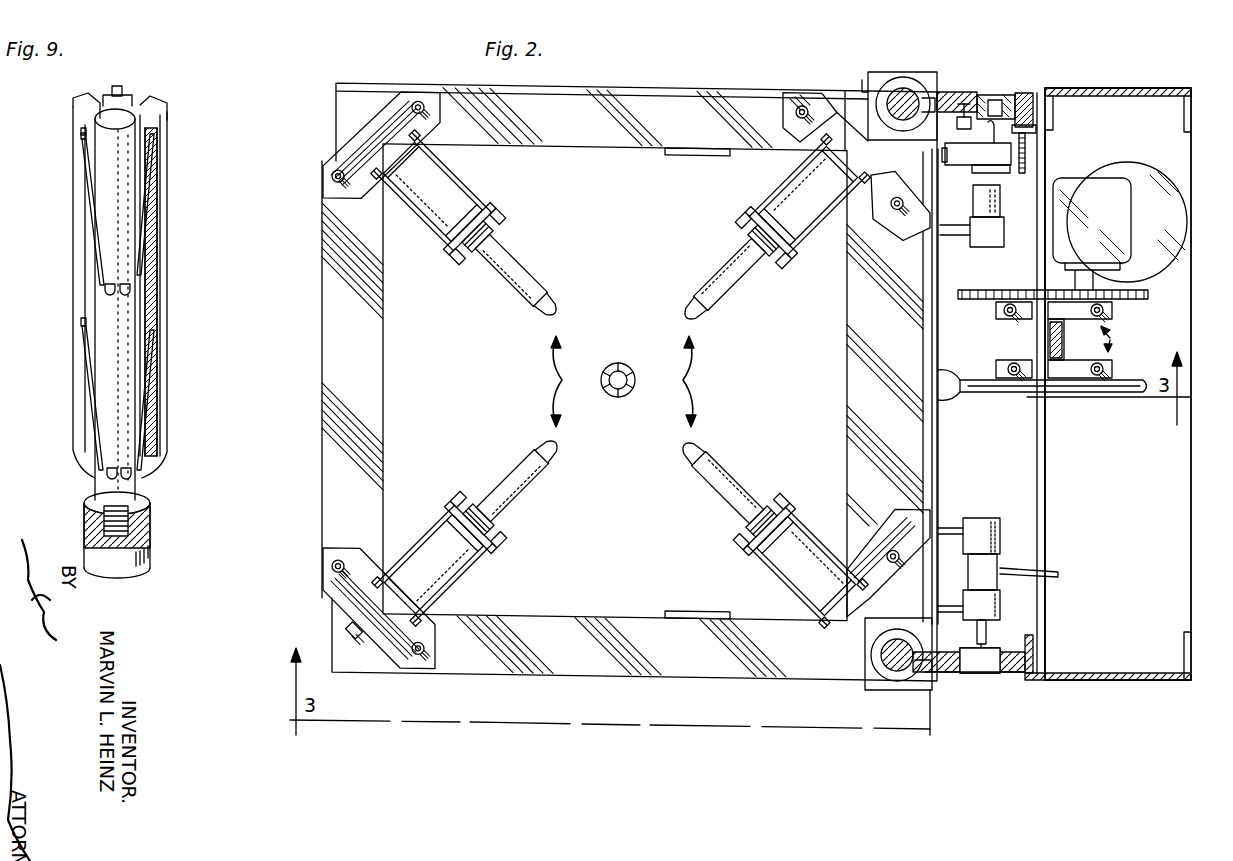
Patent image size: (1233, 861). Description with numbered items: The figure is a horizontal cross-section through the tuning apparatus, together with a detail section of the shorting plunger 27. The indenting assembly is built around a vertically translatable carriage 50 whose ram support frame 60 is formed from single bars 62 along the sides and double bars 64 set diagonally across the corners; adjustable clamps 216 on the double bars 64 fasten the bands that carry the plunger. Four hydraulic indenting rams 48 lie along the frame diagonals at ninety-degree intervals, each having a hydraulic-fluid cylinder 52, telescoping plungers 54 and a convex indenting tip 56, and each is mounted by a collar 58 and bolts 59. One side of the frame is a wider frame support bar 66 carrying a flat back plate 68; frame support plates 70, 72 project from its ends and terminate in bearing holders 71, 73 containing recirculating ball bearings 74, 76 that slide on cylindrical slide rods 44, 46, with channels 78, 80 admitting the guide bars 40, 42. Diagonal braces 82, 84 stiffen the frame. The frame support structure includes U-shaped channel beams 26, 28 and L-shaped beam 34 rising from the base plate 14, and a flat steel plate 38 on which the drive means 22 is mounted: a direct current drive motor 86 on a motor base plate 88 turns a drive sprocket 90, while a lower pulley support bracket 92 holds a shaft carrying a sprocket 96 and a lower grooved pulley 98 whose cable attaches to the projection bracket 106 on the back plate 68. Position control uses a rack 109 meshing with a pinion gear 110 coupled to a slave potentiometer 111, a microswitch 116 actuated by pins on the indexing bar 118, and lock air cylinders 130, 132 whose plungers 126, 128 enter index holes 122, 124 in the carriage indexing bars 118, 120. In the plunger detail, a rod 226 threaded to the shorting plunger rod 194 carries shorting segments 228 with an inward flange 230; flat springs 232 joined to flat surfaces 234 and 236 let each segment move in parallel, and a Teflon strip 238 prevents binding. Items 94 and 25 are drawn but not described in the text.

In FIG. 2, the ram support frame 60 is at (649, 371).
In FIG. 2, the double bars 64 is at (410, 94).
In FIG. 2, the single bars 62 is at (538, 140).
In FIG. 2, the adjustable clamps 216 is at (378, 645).
In FIG. 2, the diagonally extending brace 82 is at (680, 150).
In FIG. 2, the diagonally extending brace 84 is at (690, 604).
In FIG. 2, the frame support bar 66 is at (850, 338).
In FIG. 2, the frame support plate 70 is at (925, 140).
In FIG. 2, the frame support plate 72 is at (852, 585).
In FIG. 2, the flat back plate 68 is at (940, 470).
In FIG. 2, the bolts 59 is at (458, 172).
In FIG. 2, the collar 58 is at (490, 190).
In FIG. 2, the hydraulic-fluid cylinder 52 is at (482, 220).
In FIG. 2, the telescoping plungers 54 is at (510, 252).
In FIG. 2, the indenting tip 56 is at (558, 308).
In FIG. 2, the hydraulic indenting rams 48 is at (624, 381).
In FIG. 9, the shorting plunger 27 is at (172, 222).
In FIG. 2, the shorting plunger 27 is at (632, 368).
In FIG. 2, the recirculating ball bearing 74 is at (896, 76).
In FIG. 2, the bearing holder 71 is at (860, 80).
In FIG. 2, the cylindrical slide rod 44 is at (905, 92).
In FIG. 2, the channel 78 is at (950, 70).
In FIG. 2, the bar 40 is at (960, 94).
In FIG. 2, the index holes 122 is at (998, 98).
In FIG. 2, the carriage indexing bar 118 is at (1032, 92).
In FIG. 2, the rack 109 is at (1036, 128).
In FIG. 2, the pinion gear 110 is at (1024, 173).
In FIG. 2, the microswitch 116 is at (966, 140).
In FIG. 2, the plunger 126 is at (976, 153).
In FIG. 2, the slave potentiometer 111 is at (1000, 173).
In FIG. 2, the lock air cylinder 130 is at (995, 247).
In FIG. 2, the U-shaped channel beam 26 is at (1118, 86).
In FIG. 2, the flat steel plate 38 is at (1058, 470).
In FIG. 2, the U-shaped channel beam 28 is at (1105, 672).
In FIG. 2, the indenting assembly drive means 22 is at (1148, 374).
In FIG. 2, the direct current drive motor 86 is at (1130, 225).
In FIG. 2, the motor base plate 88 is at (1060, 176).
In FIG. 2, the sprocket 96 is at (990, 290).
In FIG. 2, the drive sprocket 90 is at (1112, 310).
In FIG. 2, the lower pulley support bracket 92 is at (1124, 339).
In FIG. 2, the spacer 94 is at (1064, 340).
In FIG. 2, the projection bracket 106 is at (996, 364).
In FIG. 2, the lower grooved pulley 98 is at (1075, 392).
In FIG. 2, the base plate 14 is at (1104, 464).
In FIG. 2, the control unit 25 is at (940, 203).
In FIG. 2, the lock air cylinder 132 is at (978, 518).
In FIG. 2, the plunger 128 is at (975, 638).
In FIG. 2, the index holes 124 is at (985, 652).
In FIG. 2, the carriage indexing bar 120 is at (998, 668).
In FIG. 2, the bar 42 is at (950, 674).
In FIG. 2, the L-shaped beam 34 is at (1000, 674).
In FIG. 2, the recirculating ball bearing 76 is at (885, 690).
In FIG. 2, the cylindrical slide rod 46 is at (868, 690).
In FIG. 2, the bearing holder 73 is at (910, 690).
In FIG. 2, the channel 80 is at (932, 690).
In FIG. 2, the carriage 50 is at (848, 680).
In FIG. 9, the Teflon strip 238 is at (122, 88).
In FIG. 9, the shorting segments 228 is at (160, 118).
In FIG. 9, the radially-inward facing flange 230 is at (80, 133).
In FIG. 9, the flat surfaces 236 is at (82, 140).
In FIG. 9, the rod 226 is at (112, 196).
In FIG. 9, the flat springs 232 is at (92, 256).
In FIG. 9, the flat surfaces 234 is at (128, 294).
In FIG. 9, the shorting plunger rod 194 is at (150, 520).